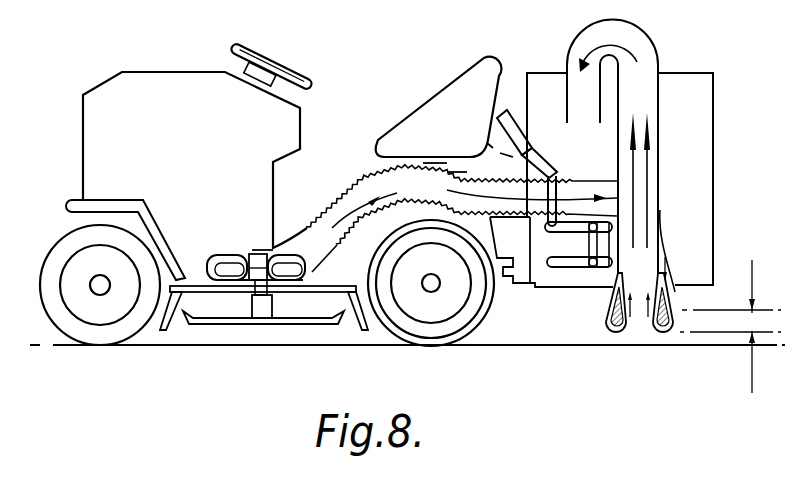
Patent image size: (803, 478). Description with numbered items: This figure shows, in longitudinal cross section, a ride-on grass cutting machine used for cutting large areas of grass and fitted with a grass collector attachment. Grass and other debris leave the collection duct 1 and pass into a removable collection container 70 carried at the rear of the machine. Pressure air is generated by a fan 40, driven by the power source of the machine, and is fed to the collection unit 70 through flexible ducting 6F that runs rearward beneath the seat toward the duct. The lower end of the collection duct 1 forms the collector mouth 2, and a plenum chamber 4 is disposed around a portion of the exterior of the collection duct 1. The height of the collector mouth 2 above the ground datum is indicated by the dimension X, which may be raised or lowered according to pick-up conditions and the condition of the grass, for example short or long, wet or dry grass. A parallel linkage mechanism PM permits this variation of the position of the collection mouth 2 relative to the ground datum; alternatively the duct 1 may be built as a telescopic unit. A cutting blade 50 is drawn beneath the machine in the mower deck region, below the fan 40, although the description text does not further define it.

The collection duct 1 is at (640, 192).
The collector mouth 2 is at (637, 327).
The plenum chamber 4 is at (675, 293).
The flexible ducting 6F is at (343, 180).
The fan 40 is at (290, 270).
The cutting blade 50 is at (285, 323).
The removable collection container 70 is at (692, 110).
The parallel linkage mechanism PM is at (573, 262).
The dimension X is at (730, 326).